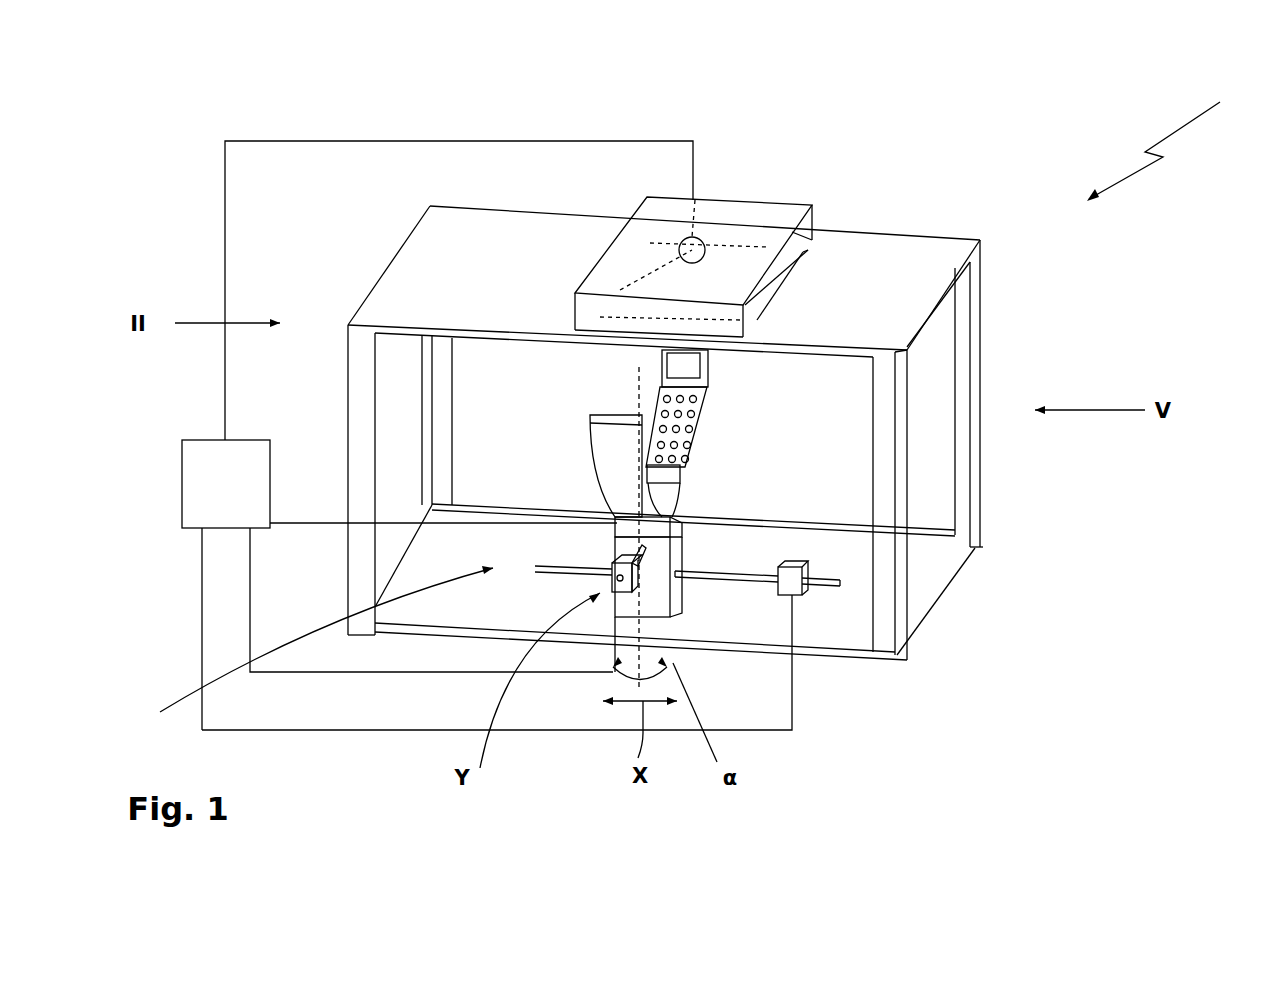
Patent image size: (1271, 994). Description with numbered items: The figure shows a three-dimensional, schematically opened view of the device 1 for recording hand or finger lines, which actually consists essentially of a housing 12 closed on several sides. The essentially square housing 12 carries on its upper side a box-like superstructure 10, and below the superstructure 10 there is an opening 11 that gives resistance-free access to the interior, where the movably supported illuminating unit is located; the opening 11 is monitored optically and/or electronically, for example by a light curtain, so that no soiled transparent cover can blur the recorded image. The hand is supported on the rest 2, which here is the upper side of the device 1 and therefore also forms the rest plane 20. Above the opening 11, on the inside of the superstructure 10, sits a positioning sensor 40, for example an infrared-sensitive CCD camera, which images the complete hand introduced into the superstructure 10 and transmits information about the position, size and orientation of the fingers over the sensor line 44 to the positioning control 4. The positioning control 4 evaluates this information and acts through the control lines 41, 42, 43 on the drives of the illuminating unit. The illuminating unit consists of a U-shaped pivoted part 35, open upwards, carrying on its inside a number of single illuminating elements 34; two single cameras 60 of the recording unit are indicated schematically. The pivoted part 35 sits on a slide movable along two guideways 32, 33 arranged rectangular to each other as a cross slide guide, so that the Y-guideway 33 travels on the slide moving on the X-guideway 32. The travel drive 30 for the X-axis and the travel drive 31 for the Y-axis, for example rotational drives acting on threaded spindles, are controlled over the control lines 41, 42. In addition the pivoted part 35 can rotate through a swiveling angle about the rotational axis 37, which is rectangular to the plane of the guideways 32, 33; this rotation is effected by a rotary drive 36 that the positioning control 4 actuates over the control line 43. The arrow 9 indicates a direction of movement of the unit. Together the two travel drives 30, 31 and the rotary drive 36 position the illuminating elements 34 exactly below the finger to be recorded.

The device 1 is at (1166, 141).
The rest 2 is at (835, 268).
The positioning control 4 is at (182, 487).
The feed direction arrow 9 is at (318, 647).
The superstructure 10 is at (777, 213).
The opening 11 is at (796, 253).
The housing 12 is at (413, 233).
The rest plane 20 is at (810, 290).
The travel drive 30 is at (803, 563).
The travel drive 31 is at (644, 547).
The guideway 32 is at (841, 581).
The guideway 33 is at (676, 574).
The illuminating elements 34 is at (703, 430).
The pivoted part 35 is at (607, 460).
The rotary drive 36 is at (615, 527).
The rotational axis 37 is at (612, 512).
The positioning sensor 40 is at (695, 238).
The control line 41 is at (200, 650).
The control line 42 is at (330, 732).
The control line 43 is at (307, 522).
The sensor line 44 is at (527, 141).
The single cameras 60 is at (593, 412).